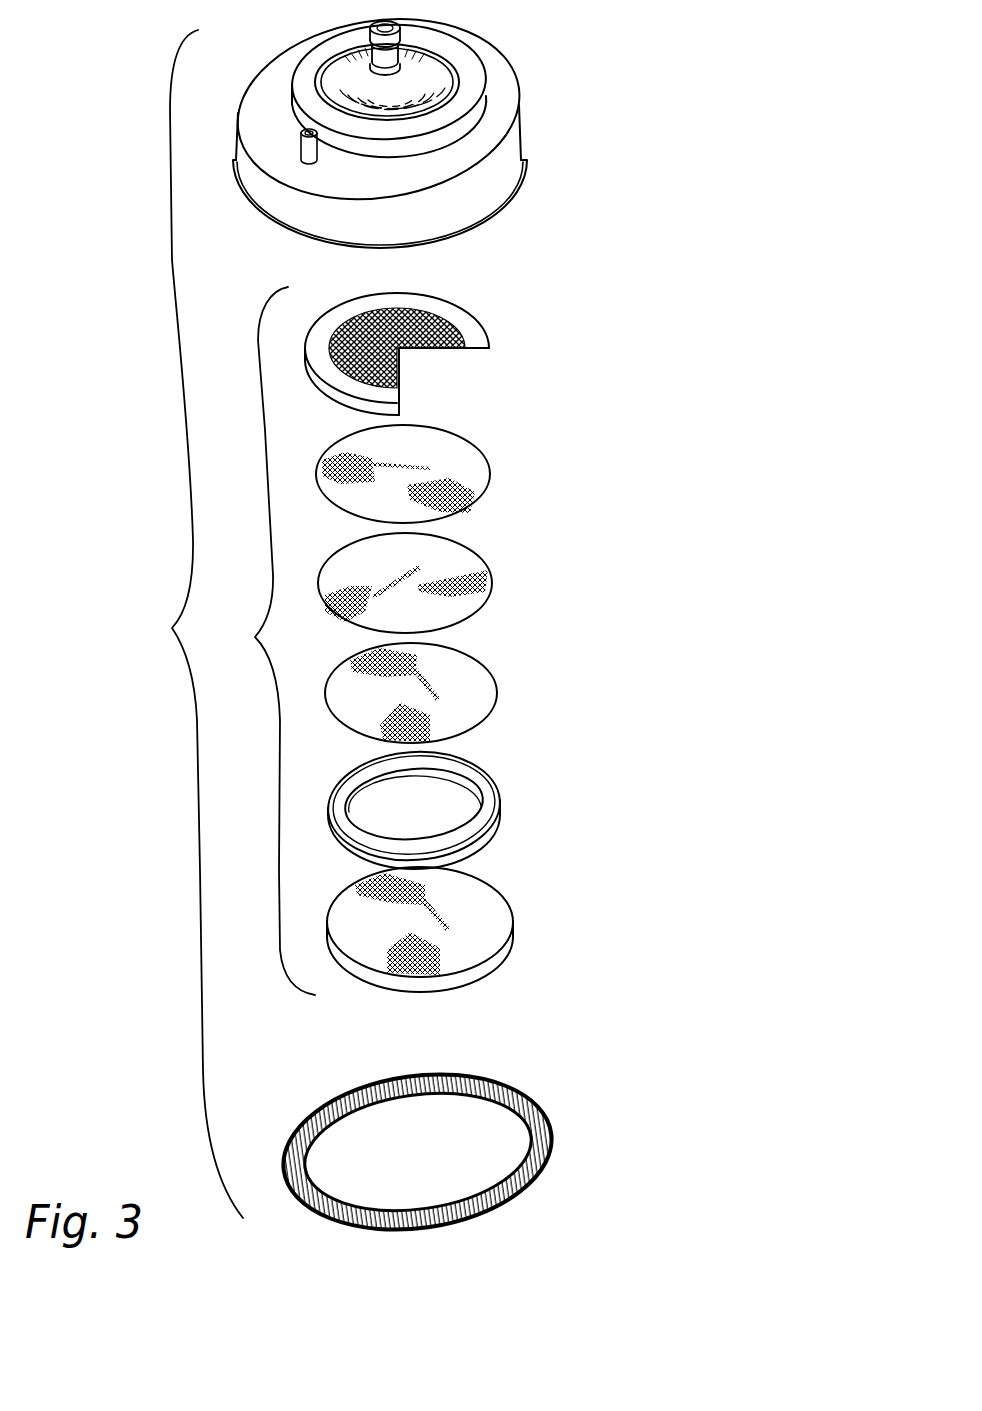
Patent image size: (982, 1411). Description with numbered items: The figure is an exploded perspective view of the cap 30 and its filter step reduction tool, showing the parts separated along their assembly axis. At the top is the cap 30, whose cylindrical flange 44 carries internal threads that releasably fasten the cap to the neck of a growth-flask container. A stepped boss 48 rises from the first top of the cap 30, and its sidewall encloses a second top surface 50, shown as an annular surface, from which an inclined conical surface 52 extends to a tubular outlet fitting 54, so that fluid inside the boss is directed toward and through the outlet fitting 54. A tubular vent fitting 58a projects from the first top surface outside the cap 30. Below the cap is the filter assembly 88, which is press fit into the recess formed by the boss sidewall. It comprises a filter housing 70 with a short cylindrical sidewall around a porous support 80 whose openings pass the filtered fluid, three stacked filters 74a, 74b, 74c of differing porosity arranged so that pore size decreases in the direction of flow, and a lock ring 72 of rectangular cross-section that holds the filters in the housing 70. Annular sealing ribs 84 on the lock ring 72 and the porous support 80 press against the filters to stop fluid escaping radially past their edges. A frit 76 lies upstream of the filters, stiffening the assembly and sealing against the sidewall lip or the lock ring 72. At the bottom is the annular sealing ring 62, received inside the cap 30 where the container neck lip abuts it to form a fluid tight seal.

The cap 30 is at (158, 630).
The filter assembly 88 is at (261, 641).
The cylindrical flange 44 is at (502, 174).
The stepped boss 48 is at (470, 117).
The second top surface 50 is at (467, 93).
The conical surface 52 is at (427, 78).
The tubular outlet fitting 54 is at (393, 50).
The tubular vent fitting 58a is at (313, 155).
The filter housing 70 is at (487, 348).
The porous support 80 is at (428, 333).
The filter 74a is at (490, 468).
The filter 74b is at (494, 580).
The filter 74c is at (496, 689).
The lock ring 72 is at (483, 804).
The annular sealing rib 84 is at (488, 788).
The frit 76 is at (512, 940).
The annular sealing ring 62 is at (549, 1123).